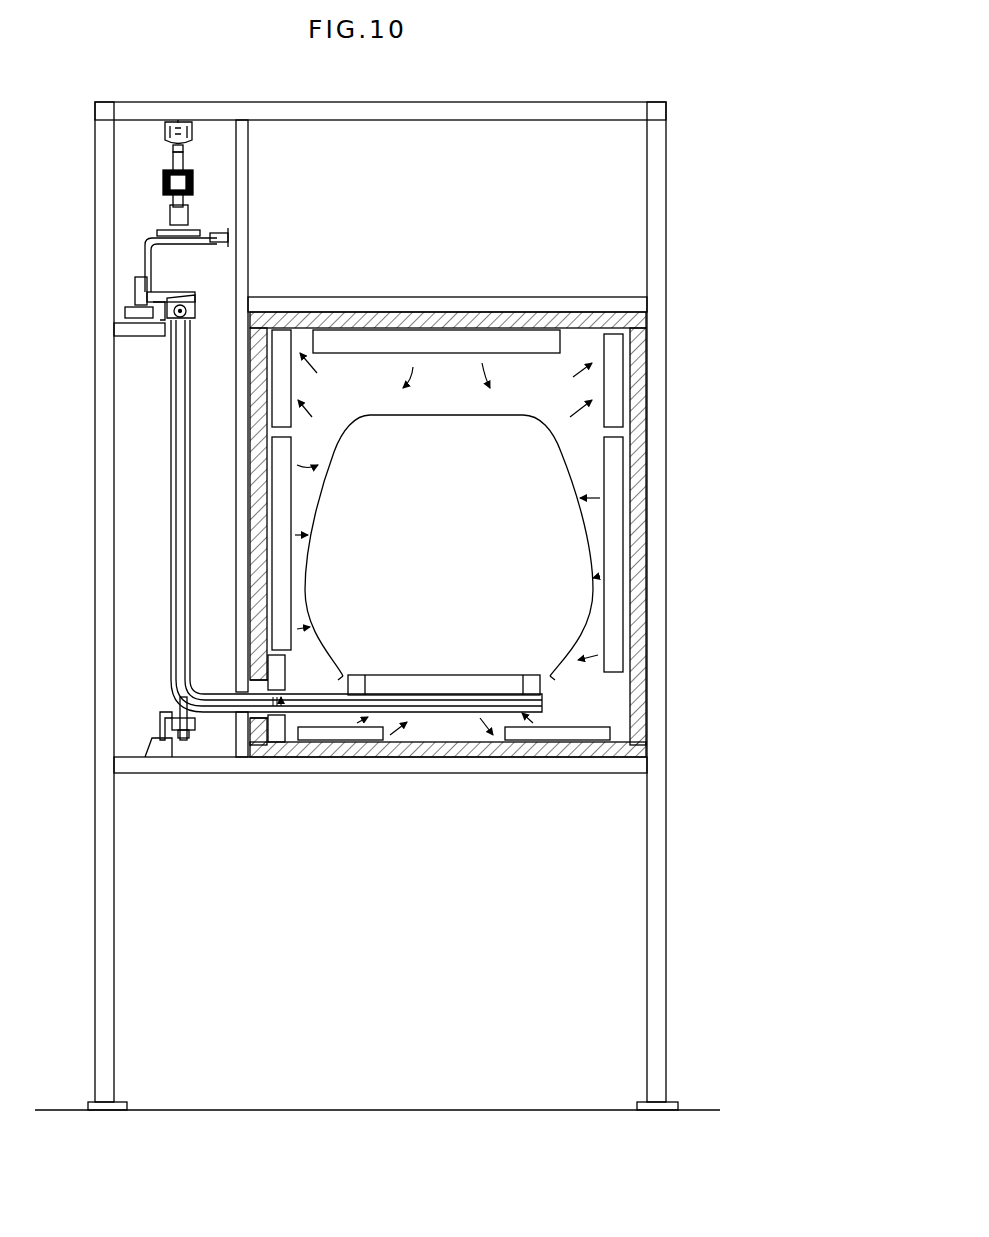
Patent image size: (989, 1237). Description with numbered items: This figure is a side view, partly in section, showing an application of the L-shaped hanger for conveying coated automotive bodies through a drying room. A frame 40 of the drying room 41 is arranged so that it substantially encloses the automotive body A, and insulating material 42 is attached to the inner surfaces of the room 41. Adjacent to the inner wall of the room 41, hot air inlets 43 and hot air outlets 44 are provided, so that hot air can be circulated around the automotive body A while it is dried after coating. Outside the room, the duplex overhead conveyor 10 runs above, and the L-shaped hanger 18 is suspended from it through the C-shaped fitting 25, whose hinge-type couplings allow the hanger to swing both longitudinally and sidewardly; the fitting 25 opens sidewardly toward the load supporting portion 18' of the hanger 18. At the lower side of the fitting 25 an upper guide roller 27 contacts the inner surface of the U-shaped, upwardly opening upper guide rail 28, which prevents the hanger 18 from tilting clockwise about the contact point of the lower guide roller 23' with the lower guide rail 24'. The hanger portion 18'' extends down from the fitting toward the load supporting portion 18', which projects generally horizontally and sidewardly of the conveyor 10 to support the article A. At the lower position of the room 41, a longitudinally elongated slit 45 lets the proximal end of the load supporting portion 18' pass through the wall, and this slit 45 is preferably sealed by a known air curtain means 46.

The duplex overhead conveyor 10 is at (193, 185).
The L-shaped hanger 18 is at (330, 516).
The load supporting portion 18' is at (446, 746).
The inner pipe 18'' is at (336, 513).
The lower guide roller 23' is at (197, 757).
The lower guide rail 24' is at (150, 714).
The C-shaped fitting 25 is at (143, 268).
The upper guide roller 27 is at (135, 297).
The upper guide rail 28 is at (165, 326).
The frame 40 is at (240, 492).
The drying room 41 is at (560, 345).
The insulating material 42 is at (256, 429).
The hot air inlet 43 is at (278, 540).
The hot air outlet 44 is at (278, 375).
The slit 45 is at (262, 686).
The air curtain means 46 is at (283, 728).
The conveyed article A is at (370, 425).